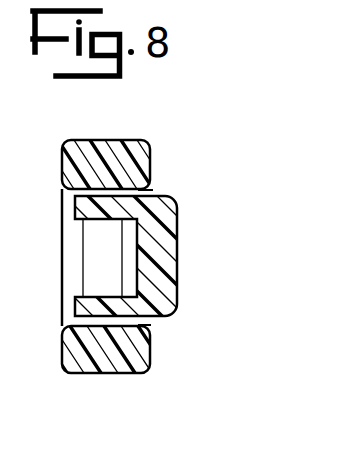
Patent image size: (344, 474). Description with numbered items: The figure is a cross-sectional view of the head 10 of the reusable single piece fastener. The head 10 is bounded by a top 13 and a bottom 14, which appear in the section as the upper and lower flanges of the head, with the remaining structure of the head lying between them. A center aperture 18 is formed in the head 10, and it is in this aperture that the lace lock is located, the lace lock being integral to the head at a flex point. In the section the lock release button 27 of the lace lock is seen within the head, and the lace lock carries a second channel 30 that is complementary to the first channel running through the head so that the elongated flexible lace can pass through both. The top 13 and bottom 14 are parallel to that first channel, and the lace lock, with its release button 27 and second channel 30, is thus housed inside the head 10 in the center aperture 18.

The head 10 is at (103, 362).
The top 13 is at (150, 322).
The bottom 14 is at (62, 168).
The center aperture 18 is at (150, 190).
The lock release button 27 is at (177, 254).
The second channel 30 is at (100, 254).